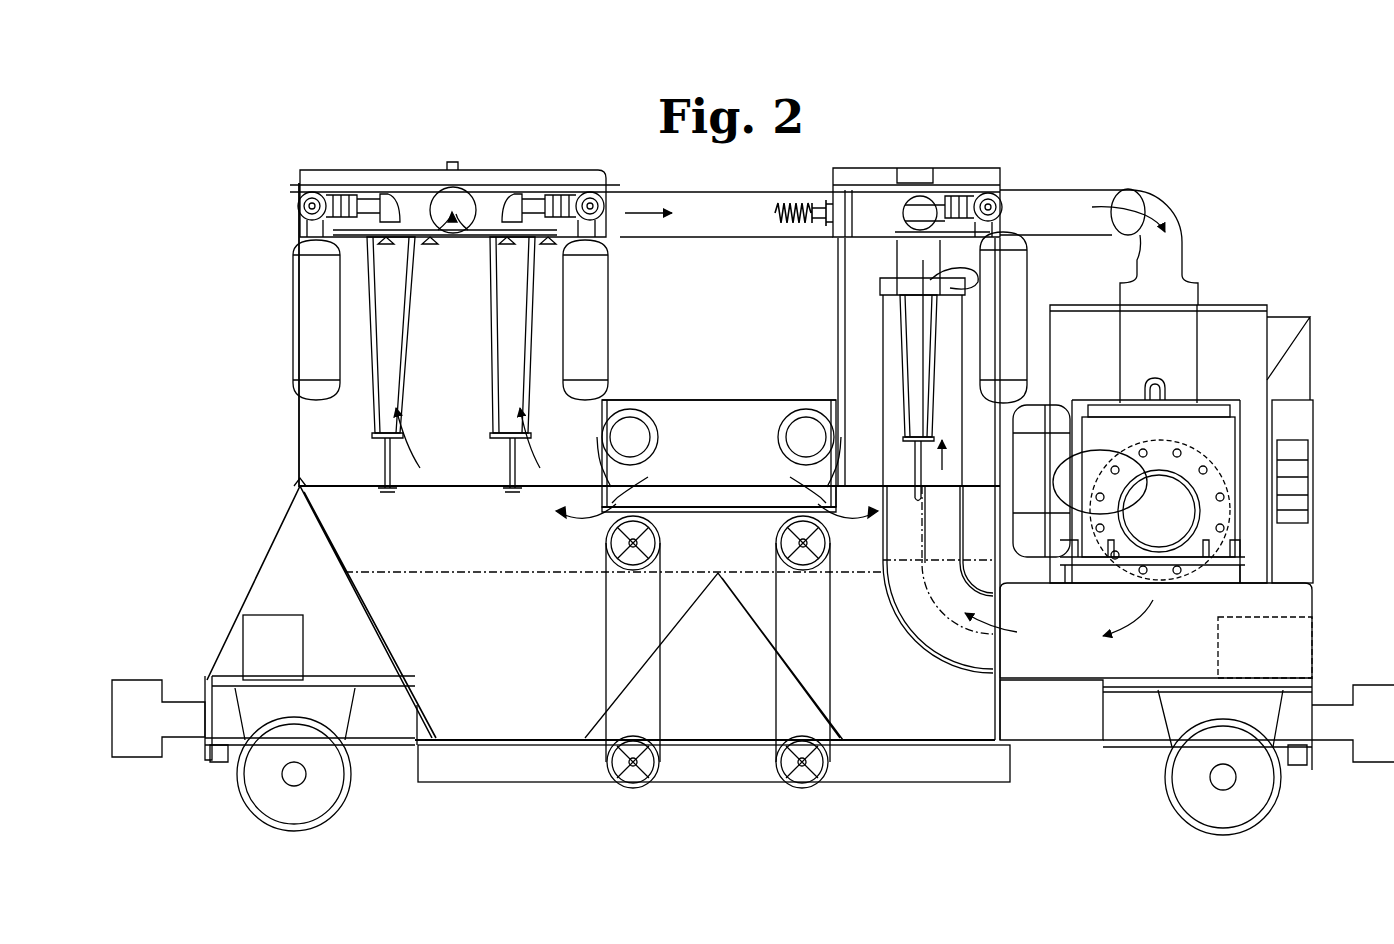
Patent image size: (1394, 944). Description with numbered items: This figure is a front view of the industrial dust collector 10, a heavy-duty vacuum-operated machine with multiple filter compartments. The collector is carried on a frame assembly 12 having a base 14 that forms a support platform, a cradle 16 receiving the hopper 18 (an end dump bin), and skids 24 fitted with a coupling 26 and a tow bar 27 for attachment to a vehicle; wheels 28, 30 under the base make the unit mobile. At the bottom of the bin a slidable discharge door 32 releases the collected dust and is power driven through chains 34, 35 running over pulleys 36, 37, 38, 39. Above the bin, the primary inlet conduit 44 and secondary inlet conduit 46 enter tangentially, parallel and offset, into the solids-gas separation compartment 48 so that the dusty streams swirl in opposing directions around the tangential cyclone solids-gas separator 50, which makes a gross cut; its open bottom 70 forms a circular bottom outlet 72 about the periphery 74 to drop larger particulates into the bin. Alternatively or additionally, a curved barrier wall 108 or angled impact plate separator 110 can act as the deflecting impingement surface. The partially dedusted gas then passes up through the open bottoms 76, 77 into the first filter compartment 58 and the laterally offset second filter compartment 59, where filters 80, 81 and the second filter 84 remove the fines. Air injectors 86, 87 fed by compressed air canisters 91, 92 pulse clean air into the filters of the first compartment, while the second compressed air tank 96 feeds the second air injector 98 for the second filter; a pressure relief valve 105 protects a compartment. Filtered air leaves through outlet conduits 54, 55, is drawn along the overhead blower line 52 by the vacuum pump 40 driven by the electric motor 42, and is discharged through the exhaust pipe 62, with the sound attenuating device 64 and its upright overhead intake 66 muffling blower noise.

The industrial dust collector 10 is at (716, 375).
The frame assembly 12 is at (298, 486).
The base 14 is at (340, 486).
The cradle 16 is at (382, 680).
The hopper 18 is at (345, 552).
The skids 24 is at (205, 683).
The coupling 26 is at (133, 757).
The tow bar 27 is at (1390, 765).
The wheel 28 is at (296, 831).
The wheel 30 is at (1175, 815).
The discharge door 32 is at (858, 782).
The chain 34 is at (606, 655).
The chain 35 is at (830, 658).
The pulley 36 is at (606, 548).
The pulley 37 is at (630, 788).
The pulley 38 is at (830, 530).
The pulley 39 is at (806, 788).
The vacuum pump 40 is at (1197, 403).
The electric motor 42 is at (1267, 533).
The primary inlet conduit 44 is at (806, 409).
The secondary inlet conduit 46 is at (630, 409).
The solids-gas separation compartment 48 is at (670, 400).
The solids-gas separator 50 is at (730, 462).
The blower line 52 is at (1095, 190).
The outlet conduit 54 is at (470, 205).
The outlet conduit 55 is at (900, 205).
The filter compartment 58 is at (299, 410).
The second filter compartment 59 is at (838, 283).
The exhaust pipe 62 is at (950, 660).
The sound attenuating device 64 is at (1312, 598).
The overhead intake 66 is at (1300, 395).
The open bottom 70 is at (735, 512).
The bottom outlet 72 is at (622, 495).
The periphery 74 is at (815, 496).
The open bottom 76 is at (440, 488).
The open bottom 77 is at (848, 486).
The filter 80 is at (405, 380).
The filter 81 is at (497, 332).
The second filter 84 is at (900, 350).
The air injector 86 is at (340, 190).
The air injector 87 is at (572, 195).
The compressed air canister 91 is at (293, 318).
The compressed air canister 92 is at (608, 300).
The second compressed air tank 96 is at (1027, 292).
The second air injector 98 is at (998, 200).
The pressure relief valve 105 is at (795, 205).
The curved barrier wall 108 is at (598, 480).
The impact plate separator 110 is at (838, 418).